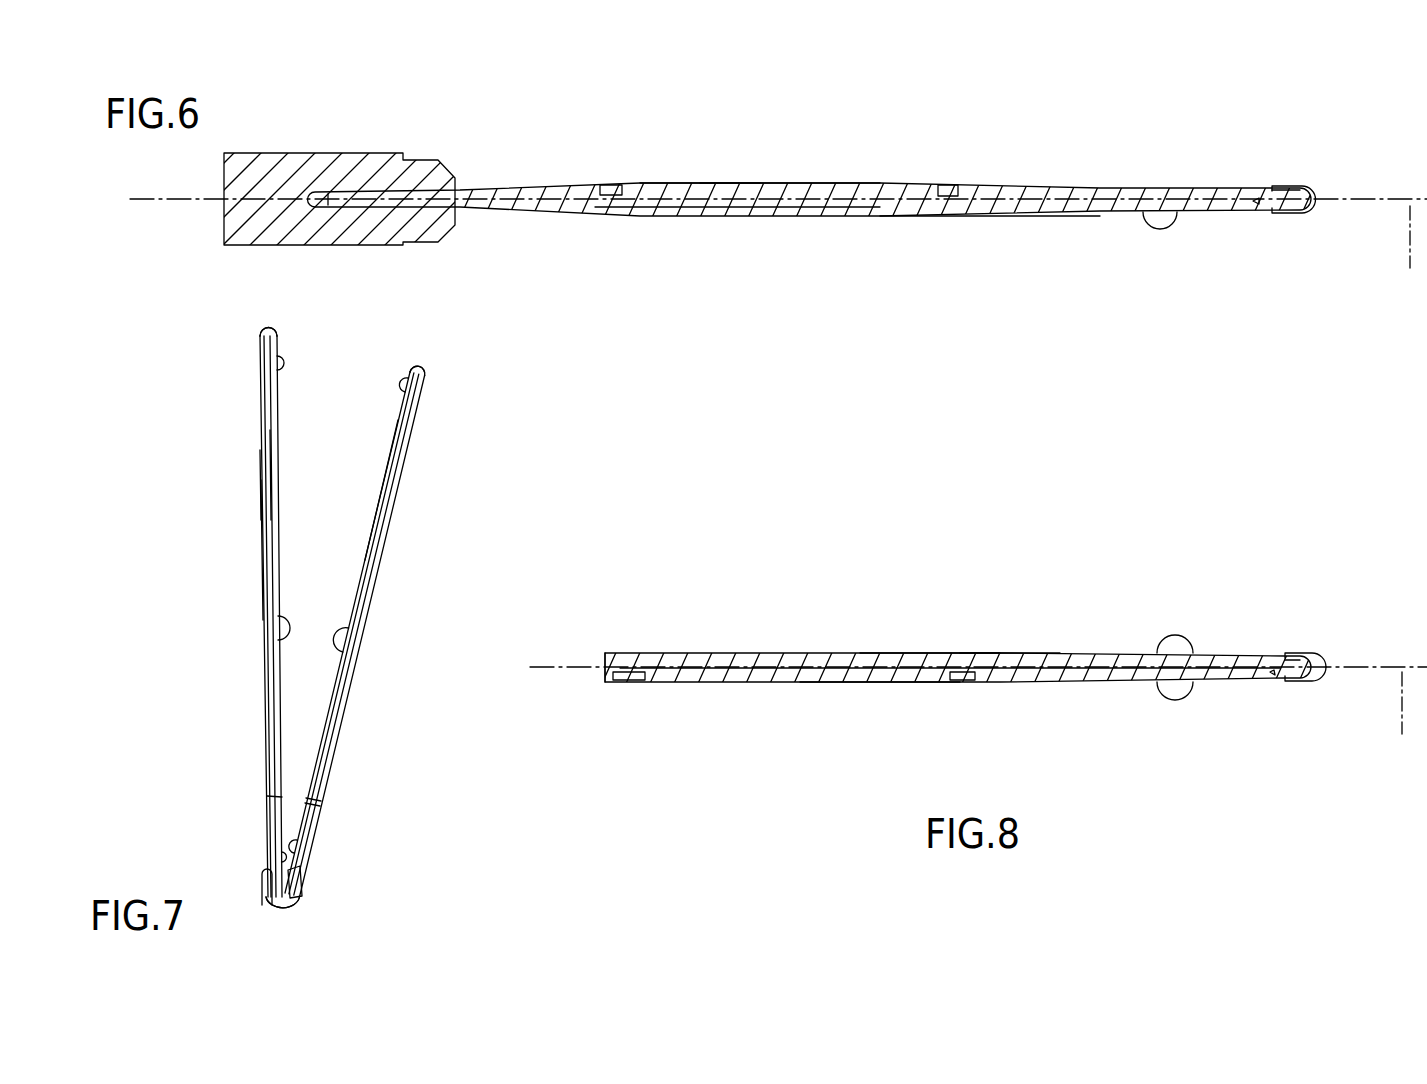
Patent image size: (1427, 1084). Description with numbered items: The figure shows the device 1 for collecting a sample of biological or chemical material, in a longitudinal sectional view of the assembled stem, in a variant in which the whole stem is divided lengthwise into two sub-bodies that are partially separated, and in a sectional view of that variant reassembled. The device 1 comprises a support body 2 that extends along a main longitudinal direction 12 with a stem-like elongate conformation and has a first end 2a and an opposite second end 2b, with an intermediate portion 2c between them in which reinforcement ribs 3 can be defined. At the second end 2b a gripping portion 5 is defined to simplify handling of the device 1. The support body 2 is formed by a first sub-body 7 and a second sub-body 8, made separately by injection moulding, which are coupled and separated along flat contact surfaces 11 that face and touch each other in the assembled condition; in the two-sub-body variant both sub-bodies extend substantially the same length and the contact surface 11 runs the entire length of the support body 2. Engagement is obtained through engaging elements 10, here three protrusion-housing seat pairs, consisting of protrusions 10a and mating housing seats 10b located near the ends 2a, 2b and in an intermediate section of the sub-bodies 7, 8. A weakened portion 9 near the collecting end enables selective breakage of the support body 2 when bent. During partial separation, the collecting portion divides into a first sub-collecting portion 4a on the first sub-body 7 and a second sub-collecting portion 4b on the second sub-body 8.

In FIG. 6, the device 1 is at (1378, 101).
In FIG. 7, the device 1 is at (530, 411).
In FIG. 8, the device 1 is at (1098, 540).
In FIG. 6, the support body 2 is at (791, 224).
In FIG. 7, the support body 2 is at (342, 618).
In FIG. 8, the support body 2 is at (816, 647).
In FIG. 6, the first end 2a is at (1291, 186).
In FIG. 7, the first end 2a is at (290, 900).
In FIG. 8, the first end 2a is at (1296, 656).
In FIG. 6, the second end 2b is at (388, 210).
In FIG. 7, the second end 2b is at (265, 331).
In FIG. 8, the second end 2b is at (628, 652).
In FIG. 6, the intermediate portion 2c is at (770, 208).
In FIG. 7, the intermediate portion 2c is at (260, 489).
In FIG. 8, the intermediate portion 2c is at (998, 652).
In FIG. 7, the reinforcement ribs 3 is at (398, 500).
In FIG. 6, the first sub-collecting portion 4a is at (1318, 190).
In FIG. 7, the first sub-collecting portion 4a is at (266, 892).
In FIG. 8, the first sub-collecting portion 4a is at (1324, 686).
In FIG. 6, the second sub-collecting portion 4b is at (1310, 215).
In FIG. 7, the second sub-collecting portion 4b is at (300, 886).
In FIG. 8, the second sub-collecting portion 4b is at (1327, 655).
In FIG. 6, the gripping portion 5 is at (292, 176).
In FIG. 6, the first sub-body 7 is at (880, 182).
In FIG. 7, the first sub-body 7 is at (258, 562).
In FIG. 8, the first sub-body 7 is at (880, 690).
In FIG. 6, the second sub-body 8 is at (895, 223).
In FIG. 7, the second sub-body 8 is at (385, 571).
In FIG. 8, the second sub-body 8 is at (886, 648).
In FIG. 6, the weakened portion 9 is at (1178, 208).
In FIG. 7, the weakened portion 9 is at (316, 803).
In FIG. 8, the weakened portion 9 is at (1195, 685).
In FIG. 6, the engaging elements 10 is at (604, 187).
In FIG. 7, the engaging elements 10 is at (398, 378).
In FIG. 8, the engaging elements 10 is at (625, 684).
In FIG. 7, the protrusions 10a is at (405, 380).
In FIG. 7, the housing seats 10b is at (273, 380).
In FIG. 6, the contact surfaces 11 is at (703, 218).
In FIG. 7, the contact surfaces 11 is at (385, 480).
In FIG. 8, the contact surfaces 11 is at (803, 684).
In FIG. 6, the main longitudinal direction 12 is at (1411, 256).
In FIG. 8, the main longitudinal direction 12 is at (1403, 720).